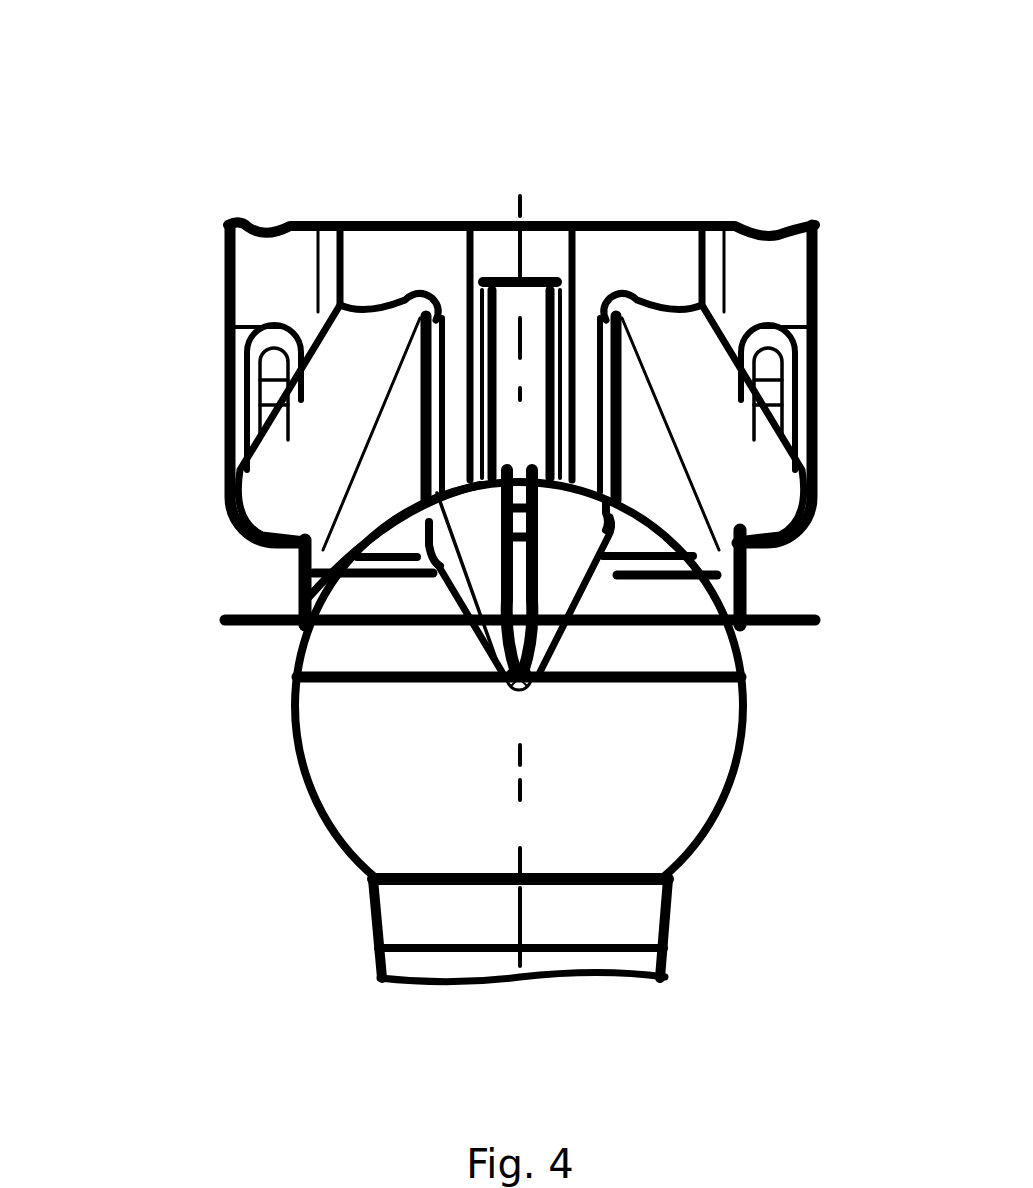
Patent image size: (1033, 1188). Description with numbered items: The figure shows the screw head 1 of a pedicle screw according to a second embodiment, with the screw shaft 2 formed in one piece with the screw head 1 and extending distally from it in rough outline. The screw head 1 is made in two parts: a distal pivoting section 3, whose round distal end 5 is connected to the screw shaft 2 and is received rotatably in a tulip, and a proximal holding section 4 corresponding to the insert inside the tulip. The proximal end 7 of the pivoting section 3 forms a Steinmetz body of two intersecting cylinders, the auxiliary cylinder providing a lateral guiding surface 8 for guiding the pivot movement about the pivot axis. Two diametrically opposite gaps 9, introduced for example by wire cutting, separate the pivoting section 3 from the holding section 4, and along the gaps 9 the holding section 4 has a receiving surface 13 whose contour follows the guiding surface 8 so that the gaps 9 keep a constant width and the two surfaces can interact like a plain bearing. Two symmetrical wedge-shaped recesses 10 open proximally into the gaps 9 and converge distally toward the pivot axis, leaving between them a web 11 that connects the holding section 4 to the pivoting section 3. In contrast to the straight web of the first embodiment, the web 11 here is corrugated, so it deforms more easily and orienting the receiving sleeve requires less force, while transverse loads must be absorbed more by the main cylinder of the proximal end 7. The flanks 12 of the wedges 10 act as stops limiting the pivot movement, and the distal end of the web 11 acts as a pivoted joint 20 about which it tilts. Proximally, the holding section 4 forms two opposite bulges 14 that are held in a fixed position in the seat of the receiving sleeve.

The screw head 1 is at (240, 110).
The screw shaft 2 is at (405, 962).
The pivoting section 3 is at (298, 796).
The holding section 4 is at (706, 214).
The distal end 5 is at (660, 813).
The proximal end 7 is at (345, 637).
The guiding surface 8 is at (740, 655).
The gaps 9 is at (748, 600).
The wedge-shaped recesses 10 is at (578, 527).
The web 11 is at (545, 692).
The flanks 12 is at (600, 547).
The receiving surface 13 is at (297, 562).
The bulges 14 is at (748, 540).
The pivoted joint 20 is at (503, 688).